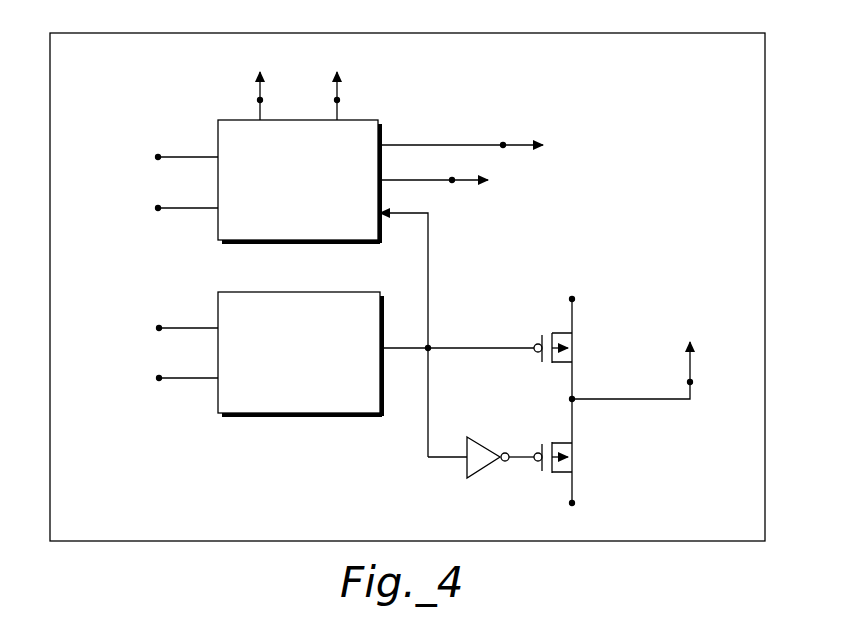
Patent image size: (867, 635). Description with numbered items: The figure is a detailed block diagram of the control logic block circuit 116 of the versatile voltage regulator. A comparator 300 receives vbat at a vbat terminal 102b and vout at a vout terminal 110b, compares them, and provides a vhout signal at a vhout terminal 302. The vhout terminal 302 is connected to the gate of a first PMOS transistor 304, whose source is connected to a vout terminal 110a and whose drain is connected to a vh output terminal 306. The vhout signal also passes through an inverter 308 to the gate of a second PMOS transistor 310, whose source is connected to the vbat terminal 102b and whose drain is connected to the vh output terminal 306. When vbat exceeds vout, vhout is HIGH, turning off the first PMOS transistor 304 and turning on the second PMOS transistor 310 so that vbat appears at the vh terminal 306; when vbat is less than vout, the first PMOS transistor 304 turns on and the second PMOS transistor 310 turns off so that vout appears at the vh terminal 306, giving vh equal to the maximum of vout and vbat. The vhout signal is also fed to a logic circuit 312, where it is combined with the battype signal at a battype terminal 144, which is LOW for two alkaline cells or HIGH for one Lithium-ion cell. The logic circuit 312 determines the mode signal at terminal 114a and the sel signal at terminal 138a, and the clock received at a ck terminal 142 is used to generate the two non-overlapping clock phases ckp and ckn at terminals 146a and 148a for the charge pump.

The control logic block circuit 116 is at (765, 59).
The logic circuit 312 is at (378, 243).
The comparator 300 is at (380, 416).
The ck terminal 142 is at (160, 155).
The battype terminal 144 is at (160, 210).
The ckp terminal 146a is at (258, 100).
The ckn terminal 148a is at (339, 100).
The mode signal terminal 114a is at (504, 143).
The sel signal terminal 138a is at (453, 182).
The vhout terminal 302 is at (429, 350).
The inverter 308 is at (470, 470).
The first PMOS transistor 304 is at (566, 333).
The second PMOS transistor 310 is at (566, 472).
The vout terminal 110a is at (574, 298).
The vh output terminal 306 is at (692, 383).
The vbat terminal 102b is at (161, 326).
The vout terminal 110b is at (161, 380).